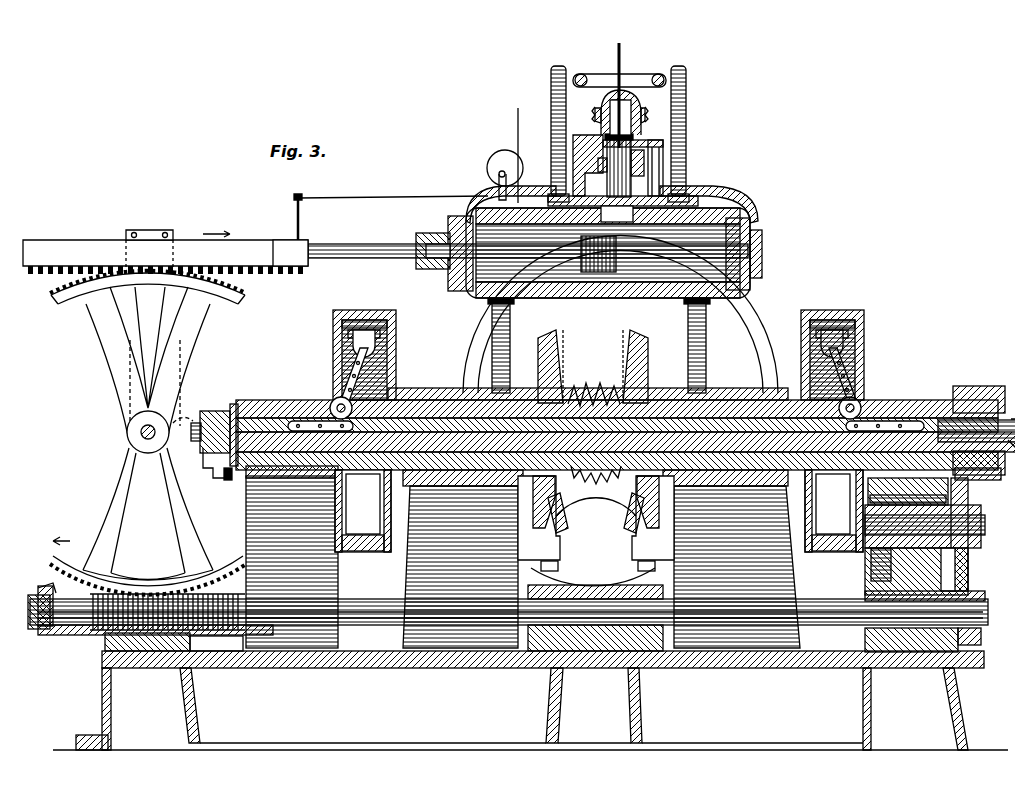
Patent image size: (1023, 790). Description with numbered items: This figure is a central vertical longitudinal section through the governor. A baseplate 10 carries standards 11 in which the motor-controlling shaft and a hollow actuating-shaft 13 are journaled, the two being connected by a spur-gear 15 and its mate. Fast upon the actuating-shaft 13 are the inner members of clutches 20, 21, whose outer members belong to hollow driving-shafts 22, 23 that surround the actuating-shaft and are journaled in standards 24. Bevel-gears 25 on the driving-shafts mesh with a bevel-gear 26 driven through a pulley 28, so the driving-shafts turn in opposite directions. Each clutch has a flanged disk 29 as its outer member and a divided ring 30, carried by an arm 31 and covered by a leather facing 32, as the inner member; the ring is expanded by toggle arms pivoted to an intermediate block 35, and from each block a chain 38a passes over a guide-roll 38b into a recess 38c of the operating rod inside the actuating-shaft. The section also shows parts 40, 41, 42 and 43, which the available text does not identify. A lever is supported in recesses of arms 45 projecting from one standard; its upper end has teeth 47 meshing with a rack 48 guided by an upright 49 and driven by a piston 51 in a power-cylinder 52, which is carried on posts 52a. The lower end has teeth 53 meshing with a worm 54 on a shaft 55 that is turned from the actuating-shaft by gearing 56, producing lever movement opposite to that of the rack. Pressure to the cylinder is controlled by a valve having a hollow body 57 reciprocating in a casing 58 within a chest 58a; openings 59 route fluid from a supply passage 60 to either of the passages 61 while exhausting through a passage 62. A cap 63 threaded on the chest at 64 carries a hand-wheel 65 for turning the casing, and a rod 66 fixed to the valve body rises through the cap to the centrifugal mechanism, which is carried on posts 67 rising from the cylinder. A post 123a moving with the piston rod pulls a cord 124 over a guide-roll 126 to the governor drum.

The baseplate 10 is at (948, 686).
The standards 11 is at (240, 512).
The actuating-shaft 13 is at (900, 398).
The spur-gear 15 is at (997, 388).
The clutch 20 is at (832, 344).
The clutch 21 is at (364, 344).
The driving-shaft 22 is at (770, 398).
The driving-shaft 23 is at (410, 384).
The standards 24 is at (395, 627).
The bevel-gears 25 is at (632, 346).
The bevel-gear 26 is at (592, 470).
The pulley 28 is at (712, 318).
The flanged disk 29 is at (382, 330).
The divided ring 30 is at (366, 545).
The arm 31 is at (340, 545).
The leather facing 32 is at (334, 314).
The intermediate block 35 is at (1011, 452).
The chain or flexible member 38a is at (862, 356).
The guide-roll 38b is at (862, 376).
The recess 38c is at (767, 400).
The nut 40 is at (206, 403).
The shaft end 41 is at (176, 400).
The sector wheel 42 is at (110, 370).
The hub 43 is at (133, 424).
The arms 45 is at (188, 450).
The teeth 47 is at (55, 283).
The rack 48 is at (55, 236).
The upright 49 is at (130, 312).
The piston 51 is at (608, 265).
The power-cylinder 52 is at (738, 240).
The posts or uprights 52a is at (500, 306).
The teeth 53 is at (45, 570).
The worm 54 is at (92, 630).
The shaft 55 is at (840, 617).
The gearing 56 is at (955, 570).
The hollow body 57 is at (622, 128).
The casing 58 is at (625, 135).
The chest 58a is at (636, 160).
The openings 59 is at (575, 162).
The passage 60 is at (656, 150).
The passages 61 is at (512, 205).
The passage 62 is at (630, 200).
The cap or dome 63 is at (634, 92).
The thread 64 is at (640, 100).
The hand-wheel 65 is at (645, 65).
The rod 66 is at (609, 44).
The posts or uprights 67 is at (546, 108).
The post 123a is at (292, 212).
The flexible member or cord 124 is at (392, 180).
The guide-roll 126 is at (480, 155).